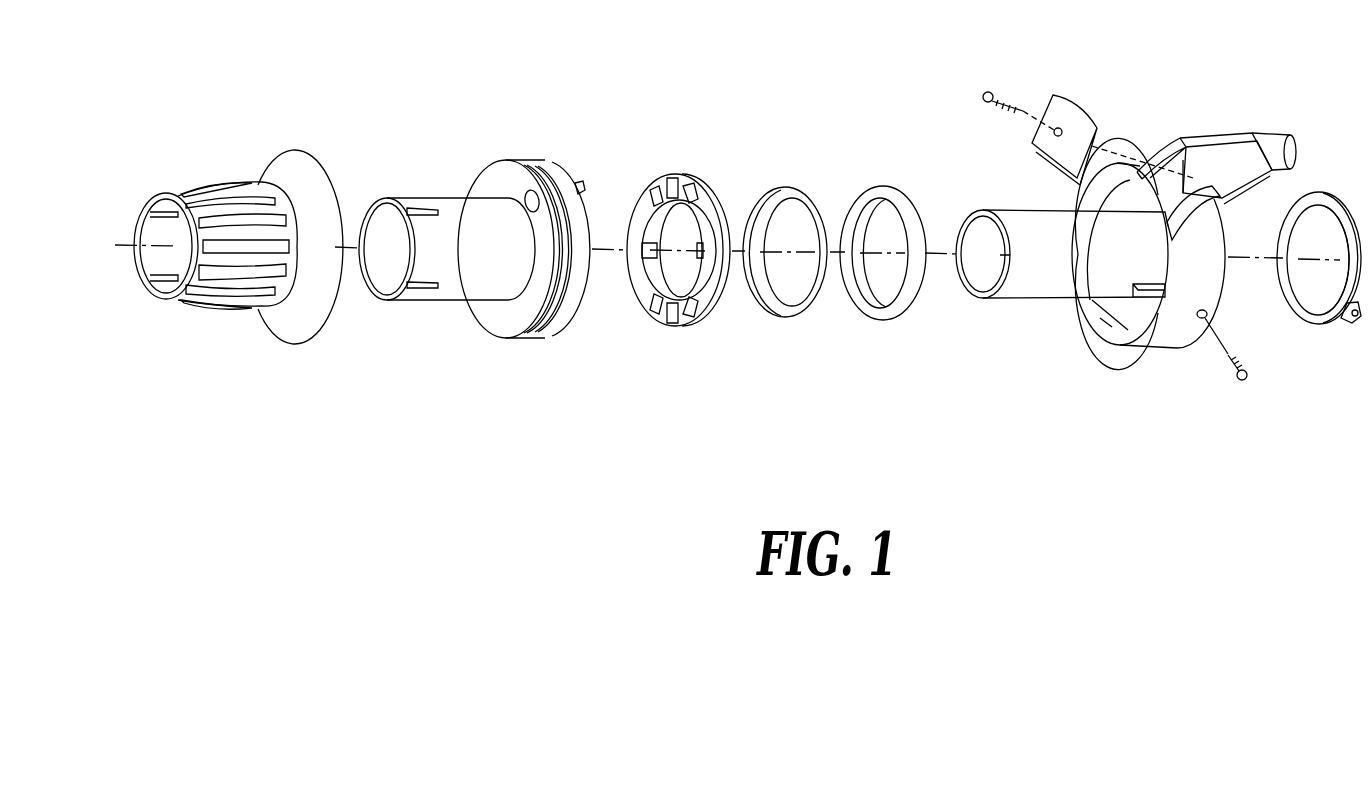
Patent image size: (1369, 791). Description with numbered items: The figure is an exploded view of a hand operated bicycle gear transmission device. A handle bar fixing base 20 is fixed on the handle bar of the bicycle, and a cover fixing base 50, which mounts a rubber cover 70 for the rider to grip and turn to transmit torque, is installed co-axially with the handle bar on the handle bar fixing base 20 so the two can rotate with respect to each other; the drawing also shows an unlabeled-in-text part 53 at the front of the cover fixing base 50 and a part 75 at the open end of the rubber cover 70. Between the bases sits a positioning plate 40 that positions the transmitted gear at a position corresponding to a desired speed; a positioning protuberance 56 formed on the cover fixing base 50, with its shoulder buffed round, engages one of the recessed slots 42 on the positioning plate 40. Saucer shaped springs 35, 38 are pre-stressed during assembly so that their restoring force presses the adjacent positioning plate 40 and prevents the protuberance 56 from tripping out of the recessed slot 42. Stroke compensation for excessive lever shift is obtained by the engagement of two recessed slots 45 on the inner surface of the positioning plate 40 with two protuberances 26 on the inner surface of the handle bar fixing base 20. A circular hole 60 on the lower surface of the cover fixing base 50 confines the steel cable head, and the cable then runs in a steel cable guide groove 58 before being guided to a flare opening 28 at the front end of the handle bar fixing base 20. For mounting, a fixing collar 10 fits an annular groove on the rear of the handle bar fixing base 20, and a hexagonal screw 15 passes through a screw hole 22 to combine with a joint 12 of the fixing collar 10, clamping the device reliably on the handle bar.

The fixing collar 10 is at (1320, 269).
The joint 12 is at (1349, 326).
The hexagonal screw 15 is at (1235, 382).
The handle bar fixing base 20 is at (1126, 269).
The screw hole 22 is at (1203, 319).
The protuberances 26 is at (1121, 300).
The flare opening 28 is at (1172, 175).
The saucer shaped spring 35 is at (887, 192).
The saucer shaped spring 38 is at (780, 188).
The positioning plate 40 is at (674, 237).
The recessed slots 42 is at (671, 185).
The recessed slots 45 is at (642, 258).
The cover fixing base 50 is at (537, 264).
The inner tube 53 is at (417, 289).
The positioning protuberance 56 is at (582, 184).
The steel cable guide groove 58 is at (550, 334).
The circular hole 60 is at (525, 192).
The rubber cover 70 is at (214, 308).
The knob opening 75 is at (152, 212).